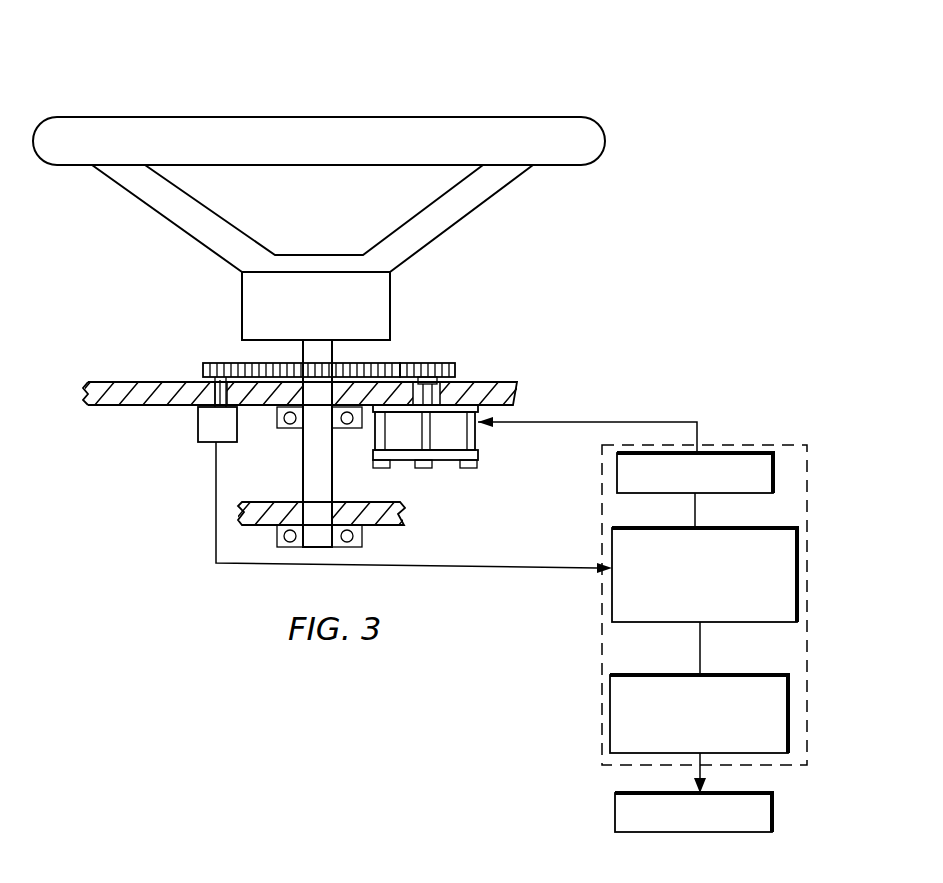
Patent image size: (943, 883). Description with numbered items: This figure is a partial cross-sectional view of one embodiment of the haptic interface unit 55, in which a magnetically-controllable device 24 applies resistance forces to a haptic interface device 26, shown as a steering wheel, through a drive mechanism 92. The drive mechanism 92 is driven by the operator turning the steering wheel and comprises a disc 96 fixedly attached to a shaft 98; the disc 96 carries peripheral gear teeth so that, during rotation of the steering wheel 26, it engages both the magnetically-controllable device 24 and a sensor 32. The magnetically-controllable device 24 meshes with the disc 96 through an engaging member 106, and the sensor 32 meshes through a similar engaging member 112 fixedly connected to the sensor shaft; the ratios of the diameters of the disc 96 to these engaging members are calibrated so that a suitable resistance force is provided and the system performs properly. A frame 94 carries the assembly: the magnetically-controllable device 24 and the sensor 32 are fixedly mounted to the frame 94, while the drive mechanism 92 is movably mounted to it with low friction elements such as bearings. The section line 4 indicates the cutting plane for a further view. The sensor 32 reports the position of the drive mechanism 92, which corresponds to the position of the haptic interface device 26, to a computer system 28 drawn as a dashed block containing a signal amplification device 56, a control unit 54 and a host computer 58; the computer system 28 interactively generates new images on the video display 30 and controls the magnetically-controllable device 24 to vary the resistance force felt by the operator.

The haptic interface unit 55 is at (350, 88).
The haptic interface device 26 is at (160, 200).
The drive mechanism 92 is at (226, 335).
The shaft 98 is at (318, 452).
The disc 96 is at (385, 363).
The engaging member 106 is at (455, 363).
The engaging member 112 is at (205, 366).
The frame 94 is at (517, 393).
The sensor 32 is at (200, 425).
The magnetically-controllable device 24 is at (478, 430).
The section line 4- 4 is at (470, 525).
The computer system 28 is at (807, 640).
The signal amplification device 56 is at (725, 453).
The control unit 54 is at (612, 597).
The host computer 58 is at (610, 705).
The video display 30 is at (615, 808).